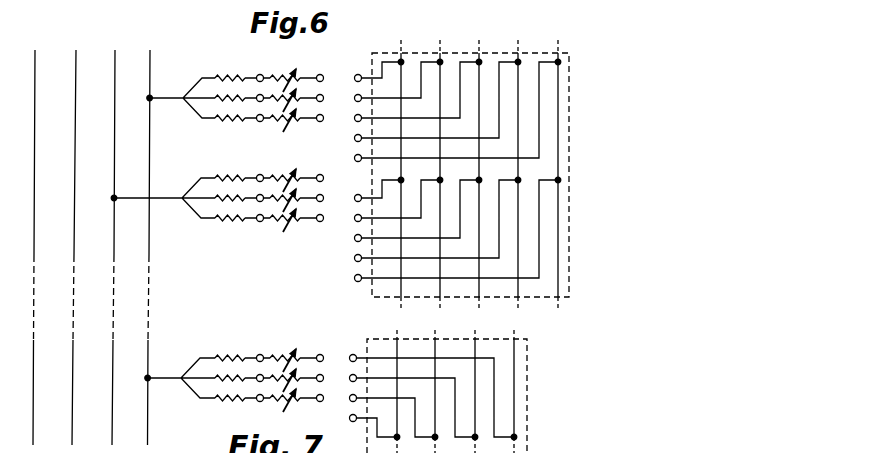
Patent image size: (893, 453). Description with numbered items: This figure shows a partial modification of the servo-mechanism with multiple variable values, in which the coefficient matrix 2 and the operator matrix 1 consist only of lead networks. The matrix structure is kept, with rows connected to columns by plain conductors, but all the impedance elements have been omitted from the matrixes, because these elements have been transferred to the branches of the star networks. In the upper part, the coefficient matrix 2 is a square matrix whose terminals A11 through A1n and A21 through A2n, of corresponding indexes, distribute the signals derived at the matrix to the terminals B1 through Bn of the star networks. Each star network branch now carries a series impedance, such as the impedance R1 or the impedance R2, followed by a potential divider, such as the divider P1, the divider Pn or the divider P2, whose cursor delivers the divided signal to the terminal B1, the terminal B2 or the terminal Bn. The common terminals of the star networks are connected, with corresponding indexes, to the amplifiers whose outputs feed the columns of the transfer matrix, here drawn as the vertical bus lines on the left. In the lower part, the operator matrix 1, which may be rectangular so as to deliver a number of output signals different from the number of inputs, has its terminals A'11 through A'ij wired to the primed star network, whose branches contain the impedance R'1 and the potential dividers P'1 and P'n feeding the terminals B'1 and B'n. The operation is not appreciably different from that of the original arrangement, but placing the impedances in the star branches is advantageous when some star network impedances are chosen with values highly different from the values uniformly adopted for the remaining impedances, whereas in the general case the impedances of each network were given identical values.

The star network impedance R1 is at (228, 68).
The potential divider P1 is at (285, 68).
The star network terminal B1 is at (326, 71).
The potential divider Pn is at (285, 170).
The star network terminal Bn is at (319, 177).
The star network impedance R2 is at (229, 166).
The potential divider P2 is at (285, 172).
The star network terminal B2 is at (322, 168).
The terminal A11 is at (353, 69).
The terminal A1n is at (351, 167).
The terminal A21 is at (351, 191).
The terminal A2n is at (348, 287).
The coefficient matrix 2 is at (564, 273).
The star network impedance R'1 is at (229, 347).
The potential divider P'1 is at (285, 352).
The star network terminal B'1 is at (322, 350).
The potential divider P'n is at (285, 404).
The star network terminal B'n is at (316, 408).
The terminal A'11 is at (352, 350).
The terminal A'ij is at (342, 427).
The operator matrix 1 is at (525, 379).